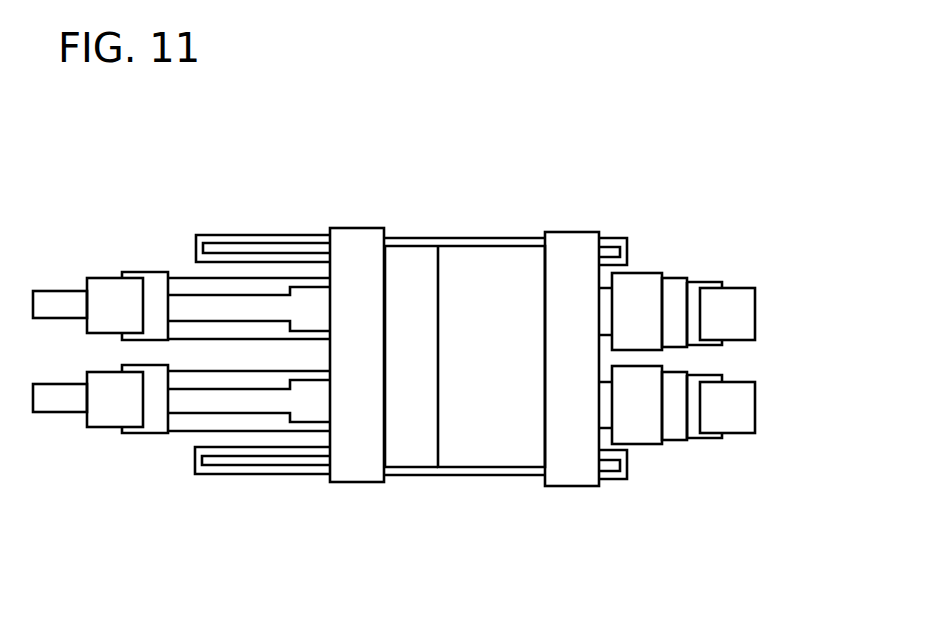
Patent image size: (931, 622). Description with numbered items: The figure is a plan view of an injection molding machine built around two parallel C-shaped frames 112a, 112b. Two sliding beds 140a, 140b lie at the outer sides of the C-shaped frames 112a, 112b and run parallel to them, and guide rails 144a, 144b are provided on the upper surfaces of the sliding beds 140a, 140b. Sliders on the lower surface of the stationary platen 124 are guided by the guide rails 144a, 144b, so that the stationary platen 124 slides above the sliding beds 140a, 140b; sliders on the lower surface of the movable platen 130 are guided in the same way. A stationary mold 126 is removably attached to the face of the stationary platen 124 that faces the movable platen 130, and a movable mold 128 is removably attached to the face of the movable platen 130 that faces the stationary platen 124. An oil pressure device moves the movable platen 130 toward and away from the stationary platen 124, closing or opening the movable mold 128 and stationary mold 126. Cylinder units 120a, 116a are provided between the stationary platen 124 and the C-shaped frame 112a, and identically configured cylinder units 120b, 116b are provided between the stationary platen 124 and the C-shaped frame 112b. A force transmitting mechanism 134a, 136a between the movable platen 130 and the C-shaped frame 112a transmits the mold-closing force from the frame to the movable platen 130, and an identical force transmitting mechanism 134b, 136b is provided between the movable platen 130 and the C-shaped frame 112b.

The C-shaped frame 112a is at (755, 407).
The C-shaped frame 112b is at (755, 312).
The cylinder unit 116a is at (675, 443).
The cylinder unit 116b is at (678, 278).
The cylinder unit 120a is at (642, 445).
The cylinder unit 120b is at (642, 273).
The stationary platen 124 is at (572, 232).
The stationary mold 126 is at (493, 246).
The movable mold 128 is at (413, 246).
The movable platen 130 is at (359, 228).
The force transmitting mechanism 134a is at (192, 433).
The force transmitting mechanism 134b is at (188, 278).
The force transmitting mechanism 136a is at (143, 433).
The force transmitting mechanism 136b is at (145, 272).
The sliding bed 140a is at (283, 475).
The sliding bed 140b is at (290, 235).
The guide rail 144a is at (228, 475).
The guide rail 144b is at (233, 235).